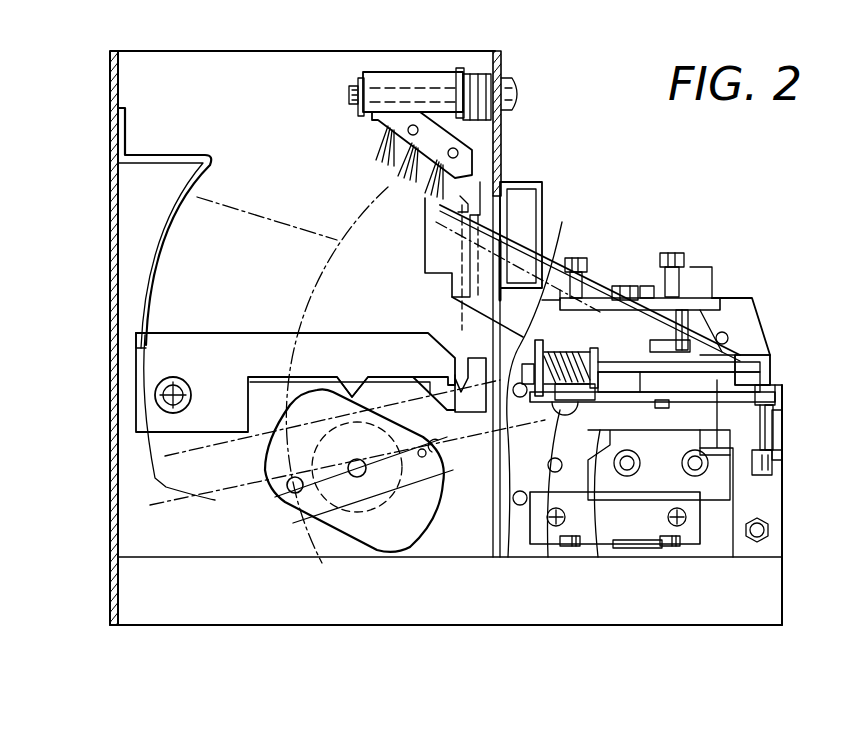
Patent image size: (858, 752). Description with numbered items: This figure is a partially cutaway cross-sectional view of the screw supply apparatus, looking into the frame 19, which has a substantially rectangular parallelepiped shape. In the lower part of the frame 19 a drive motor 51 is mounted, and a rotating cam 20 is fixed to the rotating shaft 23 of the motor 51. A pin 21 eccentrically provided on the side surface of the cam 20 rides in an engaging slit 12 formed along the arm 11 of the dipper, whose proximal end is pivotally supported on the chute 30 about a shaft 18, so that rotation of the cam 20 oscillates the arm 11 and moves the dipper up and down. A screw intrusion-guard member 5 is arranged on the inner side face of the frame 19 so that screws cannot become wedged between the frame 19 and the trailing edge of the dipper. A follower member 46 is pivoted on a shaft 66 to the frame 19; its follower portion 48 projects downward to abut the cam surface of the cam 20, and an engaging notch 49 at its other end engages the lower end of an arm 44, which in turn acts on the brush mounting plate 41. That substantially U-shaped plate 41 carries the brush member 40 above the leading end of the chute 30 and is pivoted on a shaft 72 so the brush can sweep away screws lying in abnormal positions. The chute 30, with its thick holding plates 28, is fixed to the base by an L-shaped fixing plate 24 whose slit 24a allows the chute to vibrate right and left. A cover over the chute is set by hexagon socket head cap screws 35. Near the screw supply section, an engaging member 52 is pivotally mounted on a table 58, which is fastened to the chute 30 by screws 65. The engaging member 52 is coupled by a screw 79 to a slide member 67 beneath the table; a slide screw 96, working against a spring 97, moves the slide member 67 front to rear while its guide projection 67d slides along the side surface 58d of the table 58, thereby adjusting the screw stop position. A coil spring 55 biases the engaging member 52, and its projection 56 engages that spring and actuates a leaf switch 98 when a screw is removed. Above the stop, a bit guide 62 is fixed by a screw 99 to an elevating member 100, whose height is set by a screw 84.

The screw intrusion-guard member 5 is at (173, 158).
The arm 11 is at (204, 473).
The engaging slit 12 is at (437, 440).
The shaft 18 is at (560, 410).
The frame 19 is at (114, 165).
The rotating cam 20 is at (378, 546).
The pin 21 is at (287, 487).
The rotating shaft 23 is at (350, 470).
The fixing plate 24 is at (548, 548).
The slit 24a is at (634, 540).
The holding plates 28 is at (770, 500).
The chute 30 is at (588, 300).
The hexagon socket head cap screws 35 is at (576, 258).
The brush member 40 is at (392, 160).
The brush mounting plate 41 is at (388, 70).
The arm 44 is at (425, 250).
The follower member 46 is at (233, 335).
The follower portion 48 is at (378, 390).
The engaging notch 49 is at (476, 400).
The drive motor 51 is at (323, 573).
The engaging member 52 is at (634, 298).
The coil spring 55 is at (758, 346).
The projection 56 is at (772, 368).
The table 58 is at (657, 480).
The side surface 58d is at (600, 520).
The bit guide 62 is at (752, 322).
The screws 65 is at (685, 448).
The shaft 66 is at (170, 398).
The slide member 67 is at (537, 377).
The guide projection 67d is at (570, 420).
The shaft 72 is at (422, 95).
The screw 79 is at (730, 330).
The screw 84 is at (630, 345).
The slide screw 96 is at (604, 364).
The spring 97 is at (565, 354).
The leaf switch 98 is at (765, 405).
The screw 99 is at (668, 255).
The elevating member 100 is at (712, 320).